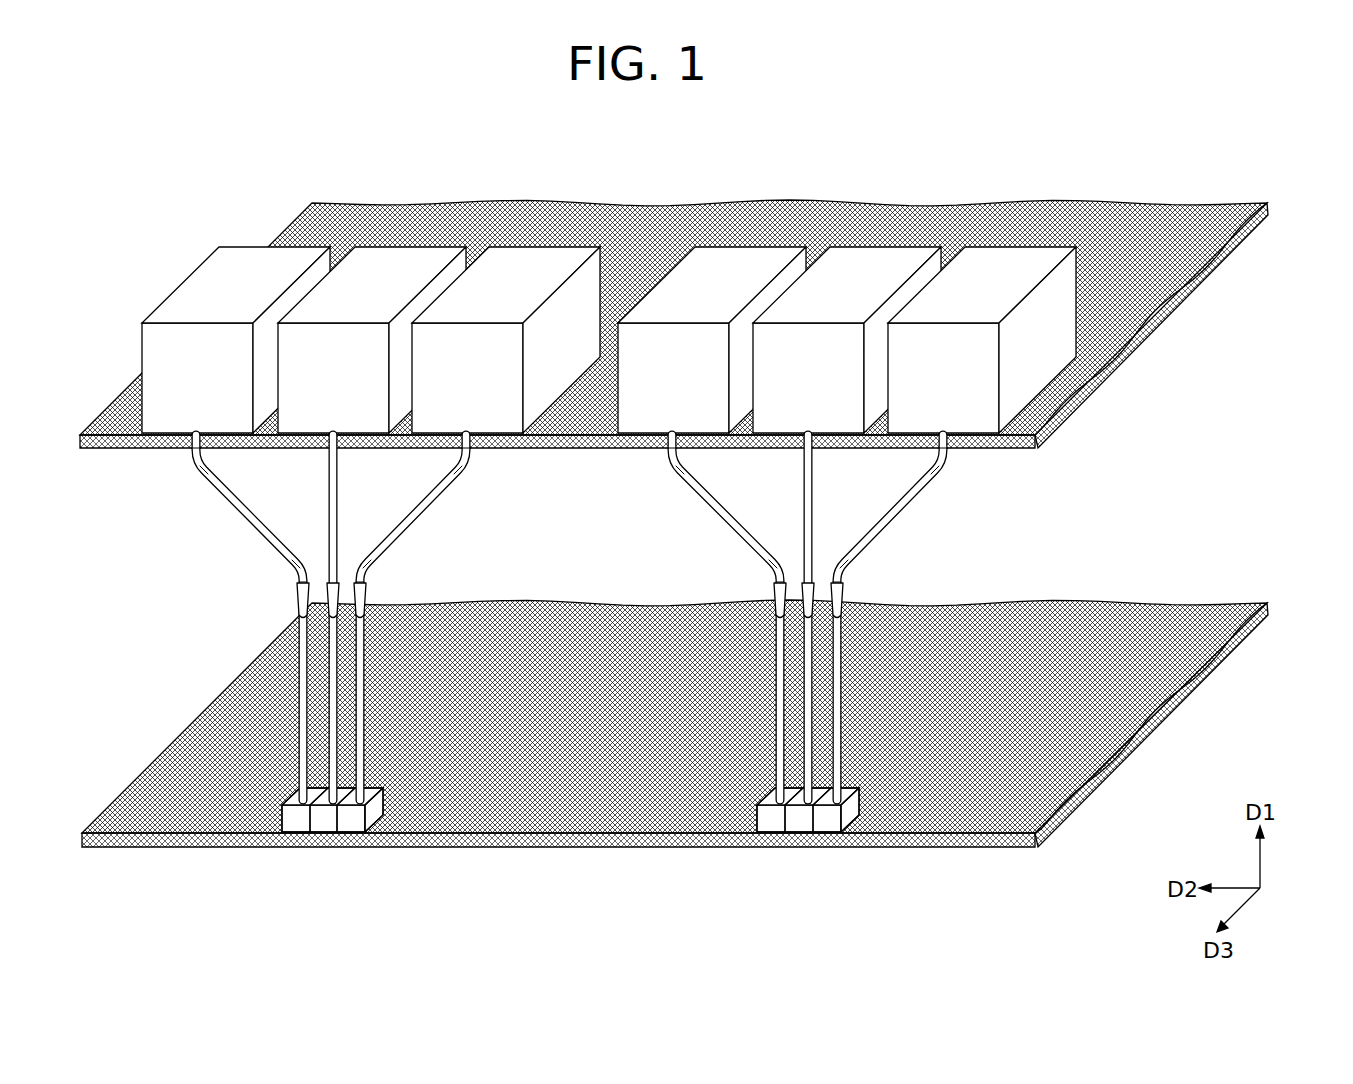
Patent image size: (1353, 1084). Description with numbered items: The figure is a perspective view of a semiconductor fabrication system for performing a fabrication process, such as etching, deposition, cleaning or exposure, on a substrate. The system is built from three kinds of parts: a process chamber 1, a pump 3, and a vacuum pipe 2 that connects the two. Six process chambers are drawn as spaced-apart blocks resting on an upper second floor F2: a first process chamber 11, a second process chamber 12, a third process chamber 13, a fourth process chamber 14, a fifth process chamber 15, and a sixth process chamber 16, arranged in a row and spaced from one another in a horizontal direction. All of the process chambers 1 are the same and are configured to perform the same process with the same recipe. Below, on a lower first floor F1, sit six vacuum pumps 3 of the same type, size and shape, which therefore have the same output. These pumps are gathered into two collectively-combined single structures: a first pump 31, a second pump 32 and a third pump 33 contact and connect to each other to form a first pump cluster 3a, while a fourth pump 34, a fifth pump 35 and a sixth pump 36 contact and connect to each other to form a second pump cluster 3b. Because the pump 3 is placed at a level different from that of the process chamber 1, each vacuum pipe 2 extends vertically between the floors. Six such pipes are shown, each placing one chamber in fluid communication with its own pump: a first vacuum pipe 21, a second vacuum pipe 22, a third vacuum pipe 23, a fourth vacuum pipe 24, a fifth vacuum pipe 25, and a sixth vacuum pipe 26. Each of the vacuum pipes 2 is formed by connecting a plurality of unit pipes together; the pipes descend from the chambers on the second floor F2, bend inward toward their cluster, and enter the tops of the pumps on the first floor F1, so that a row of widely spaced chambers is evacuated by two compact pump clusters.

The process chamber 1 is at (609, 295).
The first process chamber 11 is at (242, 255).
The second process chamber 12 is at (412, 255).
The third process chamber 13 is at (547, 255).
The fourth process chamber 14 is at (752, 255).
The fifth process chamber 15 is at (887, 255).
The sixth process chamber 16 is at (1022, 255).
The vacuum pipe 2 is at (569, 617).
The first vacuum pipe 21 is at (250, 517).
The second vacuum pipe 22 is at (330, 463).
The third vacuum pipe 23 is at (415, 517).
The fourth vacuum pipe 24 is at (727, 517).
The fifth vacuum pipe 25 is at (805, 463).
The sixth vacuum pipe 26 is at (892, 517).
The pump 3 is at (559, 870).
The first pump 31 is at (293, 825).
The second pump 32 is at (322, 825).
The third pump 33 is at (378, 845).
The fourth pump 34 is at (768, 825).
The fifth pump 35 is at (797, 825).
The sixth pump 36 is at (852, 845).
The first pump cluster 3a is at (321, 870).
The second pump cluster 3b is at (796, 870).
The first floor F1 is at (1223, 617).
The second floor F2 is at (1223, 217).